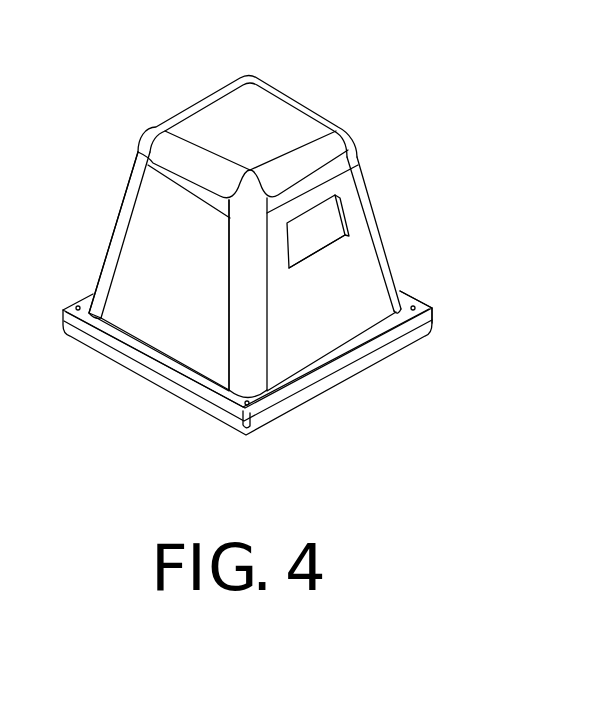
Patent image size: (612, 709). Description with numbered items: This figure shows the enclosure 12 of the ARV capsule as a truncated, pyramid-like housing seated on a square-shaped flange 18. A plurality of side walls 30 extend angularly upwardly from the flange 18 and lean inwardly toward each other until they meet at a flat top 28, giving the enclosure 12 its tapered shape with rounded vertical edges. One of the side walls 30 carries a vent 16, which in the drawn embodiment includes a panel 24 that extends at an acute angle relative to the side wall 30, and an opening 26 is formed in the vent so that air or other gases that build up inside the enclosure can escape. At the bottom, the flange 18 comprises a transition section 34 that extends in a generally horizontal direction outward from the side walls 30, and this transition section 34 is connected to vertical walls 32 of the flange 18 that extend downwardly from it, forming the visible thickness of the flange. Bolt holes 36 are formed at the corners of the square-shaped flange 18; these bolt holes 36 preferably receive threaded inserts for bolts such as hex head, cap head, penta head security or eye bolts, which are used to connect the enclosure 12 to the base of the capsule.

The enclosure 12 is at (317, 110).
The vent 16 is at (228, 234).
The flange 18 is at (420, 297).
The panel 24 is at (303, 252).
The opening 26 is at (363, 200).
The flat top 28 is at (222, 117).
The side wall 30 is at (148, 243).
The vertical walls 32 is at (362, 372).
The transition section 34 is at (398, 317).
The bolt holes 36 is at (77, 311).